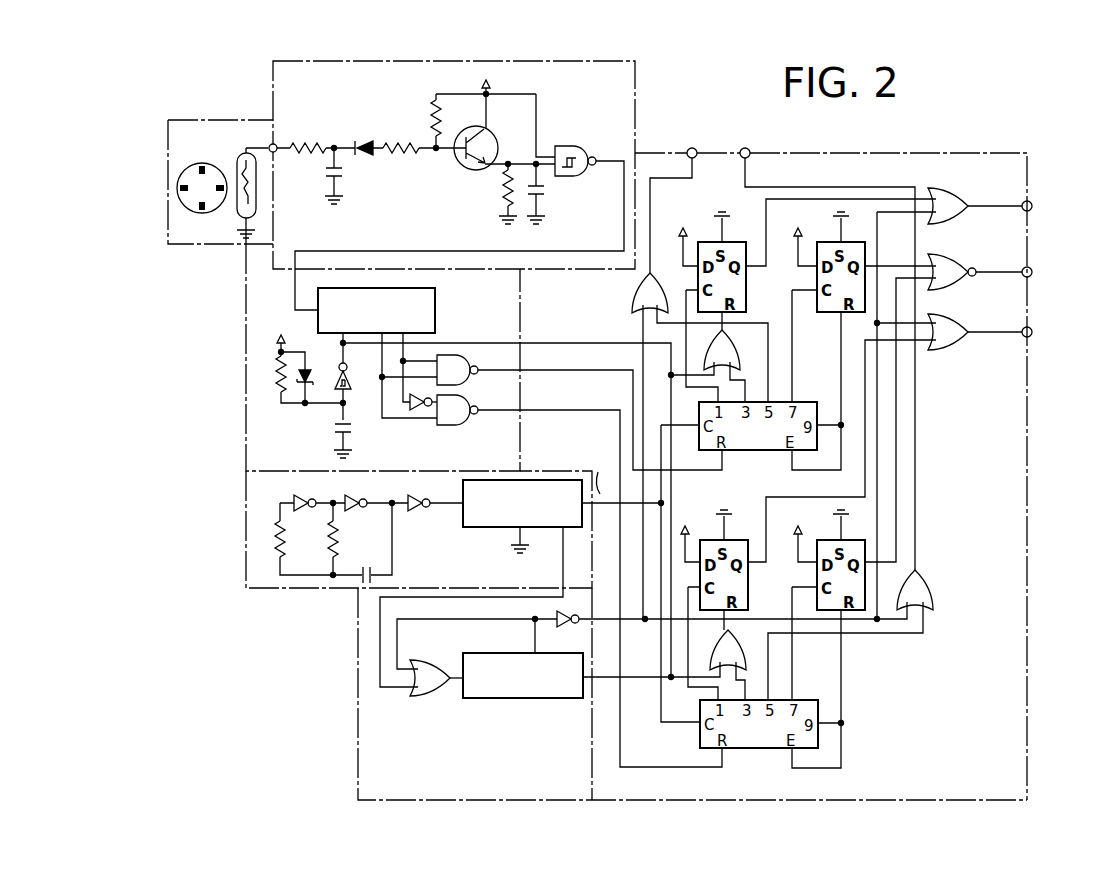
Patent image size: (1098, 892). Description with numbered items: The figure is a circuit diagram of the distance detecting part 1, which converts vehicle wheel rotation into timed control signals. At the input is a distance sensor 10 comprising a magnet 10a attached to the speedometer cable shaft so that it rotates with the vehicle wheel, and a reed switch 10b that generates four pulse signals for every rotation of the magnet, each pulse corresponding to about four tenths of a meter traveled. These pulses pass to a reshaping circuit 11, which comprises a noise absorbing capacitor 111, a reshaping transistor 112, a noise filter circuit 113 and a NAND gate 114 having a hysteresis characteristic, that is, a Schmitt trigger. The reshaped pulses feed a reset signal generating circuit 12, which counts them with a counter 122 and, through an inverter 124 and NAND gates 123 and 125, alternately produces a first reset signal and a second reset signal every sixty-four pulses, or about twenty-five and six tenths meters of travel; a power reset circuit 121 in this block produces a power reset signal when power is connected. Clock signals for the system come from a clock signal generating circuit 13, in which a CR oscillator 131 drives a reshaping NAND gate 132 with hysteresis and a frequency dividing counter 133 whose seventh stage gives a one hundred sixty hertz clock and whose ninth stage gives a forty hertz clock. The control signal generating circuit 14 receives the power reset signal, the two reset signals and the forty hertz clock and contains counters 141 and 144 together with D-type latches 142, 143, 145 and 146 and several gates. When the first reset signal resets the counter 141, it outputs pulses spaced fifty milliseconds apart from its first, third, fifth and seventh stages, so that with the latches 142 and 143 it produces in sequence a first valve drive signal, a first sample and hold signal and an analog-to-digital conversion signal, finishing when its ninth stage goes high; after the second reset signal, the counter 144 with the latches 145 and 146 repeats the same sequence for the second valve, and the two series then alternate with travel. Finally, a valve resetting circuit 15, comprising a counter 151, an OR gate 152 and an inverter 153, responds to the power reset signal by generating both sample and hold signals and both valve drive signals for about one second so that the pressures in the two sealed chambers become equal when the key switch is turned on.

The distance detecting part 1 is at (847, 129).
The distance sensor 10 is at (240, 120).
The magnet 10a is at (178, 196).
The reed switch 10b is at (237, 163).
The reshaping circuit 11 is at (430, 46).
The noise absorbing capacitor 111 is at (345, 172).
The reshaping transistor 112 is at (465, 171).
The noise filter circuit 113 is at (548, 200).
The NAND gate having a hysteresis characteristic 114 is at (569, 147).
The reset signal generating circuit 12 is at (245, 386).
The power reset circuit 121 is at (321, 410).
The counter 122 is at (436, 306).
The NAND gate 123 is at (452, 355).
The inverter 124 is at (425, 412).
The NAND gate 125 is at (470, 424).
The clock signal generating circuit 13 is at (245, 538).
The CR oscillator 131 is at (383, 535).
The reshaping NAND gate having a hysteresis characteristic 132 is at (420, 494).
The frequency dividing counter 133 is at (497, 522).
The control signal generating circuit 14 is at (952, 153).
The counter 141 is at (806, 402).
The D-type latch 142 is at (745, 272).
The D-type latch 143 is at (822, 312).
The counter 144 is at (808, 700).
The D-type latch 145 is at (747, 585).
The D-type latch 146 is at (858, 614).
The valve resetting circuit 15 is at (358, 783).
The counter 151 is at (528, 699).
The OR gate 152 is at (420, 696).
The inverter 153 is at (576, 623).